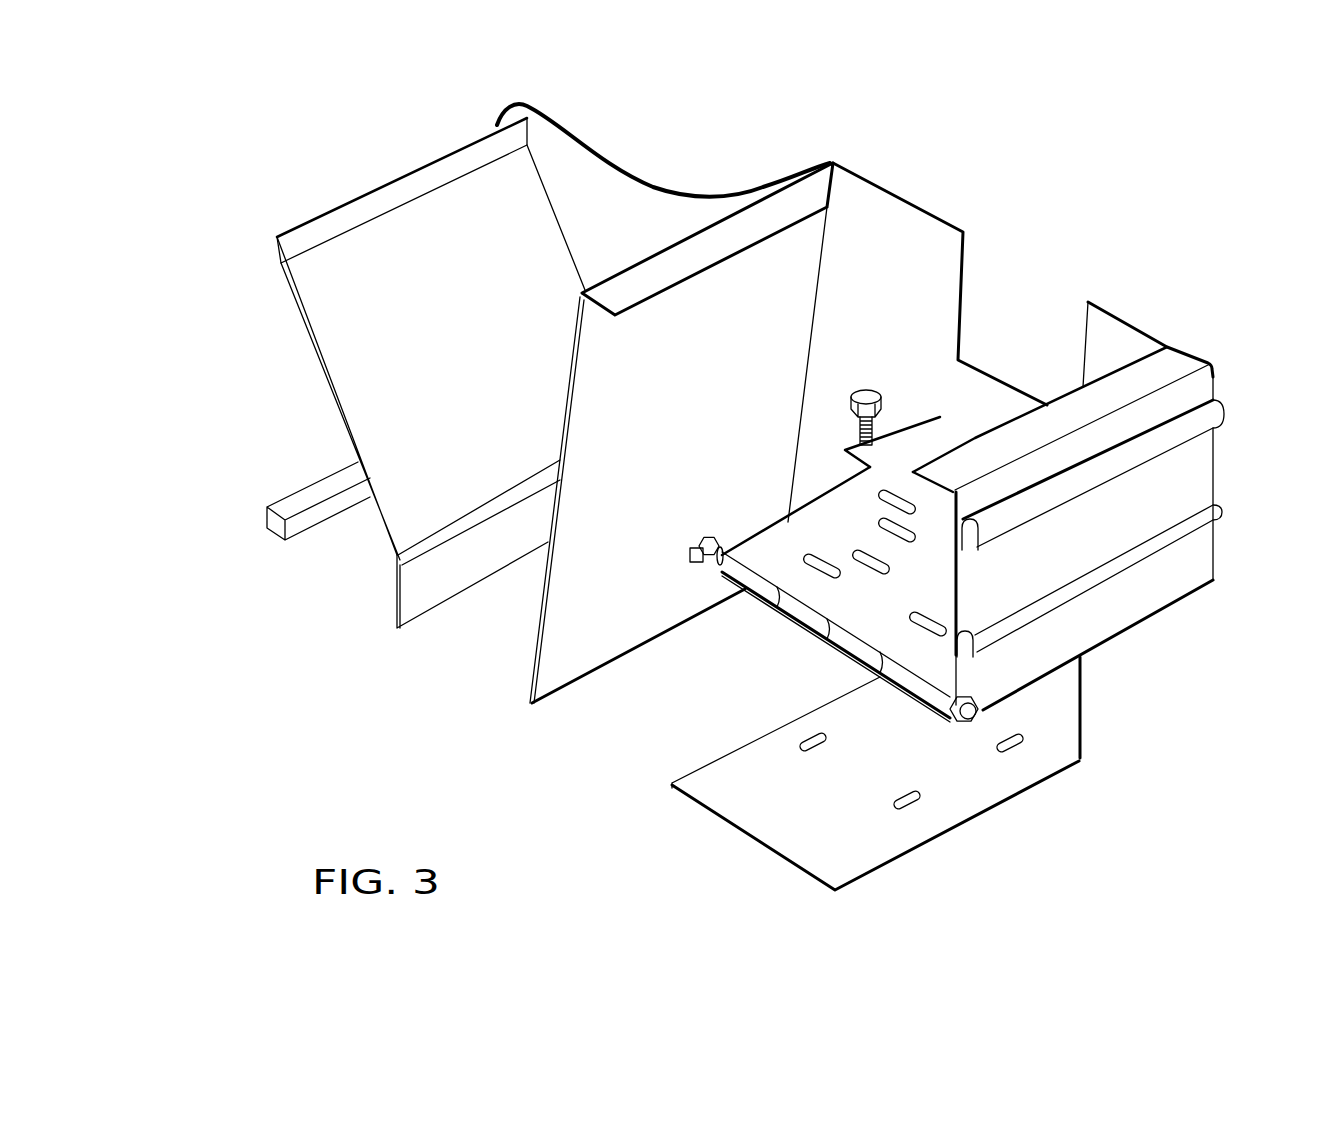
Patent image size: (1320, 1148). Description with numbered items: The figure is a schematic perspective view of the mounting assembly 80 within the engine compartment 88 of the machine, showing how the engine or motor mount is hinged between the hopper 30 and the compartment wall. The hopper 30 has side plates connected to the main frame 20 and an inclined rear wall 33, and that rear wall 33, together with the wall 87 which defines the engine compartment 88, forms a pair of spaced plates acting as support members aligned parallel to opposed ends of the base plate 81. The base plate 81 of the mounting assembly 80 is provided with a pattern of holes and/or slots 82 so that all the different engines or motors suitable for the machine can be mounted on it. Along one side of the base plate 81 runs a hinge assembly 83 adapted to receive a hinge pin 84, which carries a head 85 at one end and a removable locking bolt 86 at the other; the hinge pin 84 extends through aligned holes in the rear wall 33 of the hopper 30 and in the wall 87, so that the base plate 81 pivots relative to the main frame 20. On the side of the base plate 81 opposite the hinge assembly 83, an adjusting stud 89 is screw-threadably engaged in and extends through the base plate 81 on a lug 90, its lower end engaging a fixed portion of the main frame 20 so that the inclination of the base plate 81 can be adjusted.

The main frame 20 is at (1008, 822).
The hopper 30 is at (614, 210).
The rear wall 33 is at (654, 394).
The mounting assembly 80 is at (625, 739).
The base plate 81 is at (862, 598).
The slots 82 is at (912, 527).
The hinge assembly 83 is at (920, 685).
The hinge pin 84 is at (712, 560).
The head 85 is at (977, 713).
The removable locking bolt 86 is at (697, 540).
The wall 87 is at (1207, 376).
The engine compartment 88 is at (892, 252).
The adjusting stud 89 is at (866, 382).
The lug 90 is at (889, 456).